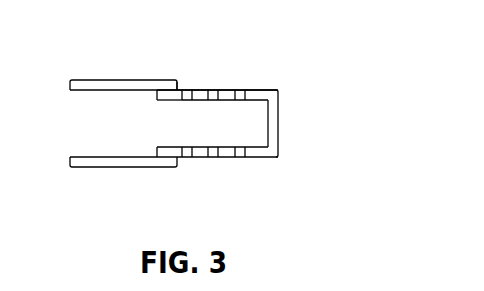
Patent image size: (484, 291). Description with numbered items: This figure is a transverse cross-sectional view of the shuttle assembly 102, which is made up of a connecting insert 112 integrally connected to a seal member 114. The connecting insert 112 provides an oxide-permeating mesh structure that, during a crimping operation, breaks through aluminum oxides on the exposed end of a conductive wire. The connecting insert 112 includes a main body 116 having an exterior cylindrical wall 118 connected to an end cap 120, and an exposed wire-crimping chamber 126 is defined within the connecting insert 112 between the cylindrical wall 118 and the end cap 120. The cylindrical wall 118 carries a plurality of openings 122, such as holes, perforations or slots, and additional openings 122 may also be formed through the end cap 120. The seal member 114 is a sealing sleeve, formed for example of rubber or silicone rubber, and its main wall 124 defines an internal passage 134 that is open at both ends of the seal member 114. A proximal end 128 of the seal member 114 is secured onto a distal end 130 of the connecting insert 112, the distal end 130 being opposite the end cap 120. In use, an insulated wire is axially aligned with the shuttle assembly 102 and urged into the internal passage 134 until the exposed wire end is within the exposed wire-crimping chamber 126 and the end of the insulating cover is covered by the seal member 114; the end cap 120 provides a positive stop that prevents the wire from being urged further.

The shuttle assembly 102 is at (308, 52).
The connecting insert 112 is at (282, 148).
The seal member 114 is at (110, 167).
The main body 116 is at (230, 90).
The cylindrical wall 118 is at (227, 157).
The end cap 120 is at (279, 112).
The openings 122 is at (188, 90).
The main wall 124 is at (98, 80).
The exposed wire-crimping chamber 126 is at (207, 125).
The proximal end 128 is at (168, 80).
The distal end 130 is at (170, 100).
The internal passage 134 is at (92, 128).